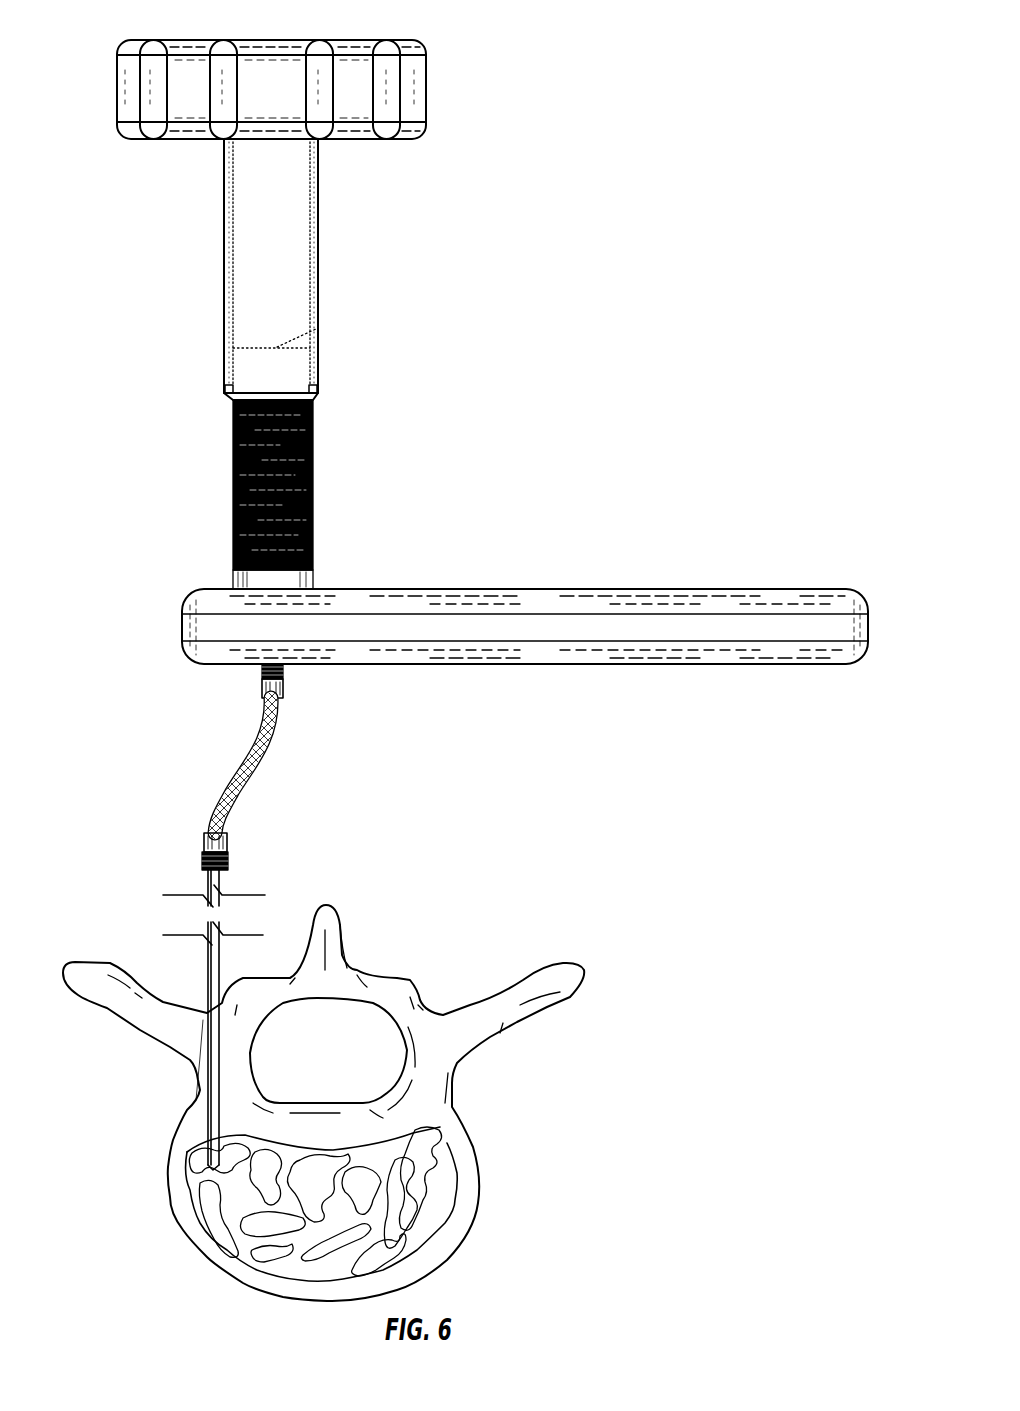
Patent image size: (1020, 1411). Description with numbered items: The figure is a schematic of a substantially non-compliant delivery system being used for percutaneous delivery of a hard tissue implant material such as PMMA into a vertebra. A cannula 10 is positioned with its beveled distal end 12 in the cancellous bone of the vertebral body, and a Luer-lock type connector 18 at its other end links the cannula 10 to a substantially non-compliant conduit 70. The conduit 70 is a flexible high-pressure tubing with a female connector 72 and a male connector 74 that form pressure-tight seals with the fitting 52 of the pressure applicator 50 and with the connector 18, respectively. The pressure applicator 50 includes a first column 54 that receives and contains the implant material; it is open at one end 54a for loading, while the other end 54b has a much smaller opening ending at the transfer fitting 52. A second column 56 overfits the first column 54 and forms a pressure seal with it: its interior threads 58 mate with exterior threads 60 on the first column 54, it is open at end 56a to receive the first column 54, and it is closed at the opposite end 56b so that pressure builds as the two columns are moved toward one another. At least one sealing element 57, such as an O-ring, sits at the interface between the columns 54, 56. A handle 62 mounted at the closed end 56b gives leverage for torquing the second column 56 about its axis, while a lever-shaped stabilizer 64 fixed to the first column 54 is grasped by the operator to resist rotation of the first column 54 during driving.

The cannula 10 is at (230, 966).
The distal end 12 is at (212, 1168).
The connector 18 is at (203, 861).
The pressure applicator 50 is at (368, 256).
The fitting 52 is at (285, 670).
The first column 54 is at (315, 512).
The open end of first column 54a is at (318, 328).
The other end of first column 54b is at (222, 880).
The second column 56 is at (320, 250).
The open end of second column 56a is at (314, 401).
The closed end of second column 56b is at (248, 40).
The sealing element 57 is at (318, 388).
The interior threads 58 is at (318, 163).
The exterior threads 60 is at (232, 452).
The handle 62 is at (426, 88).
The stabilizer 64 is at (638, 590).
The conduit 70 is at (266, 760).
The female connector 72 is at (262, 683).
The male connector 74 is at (204, 843).